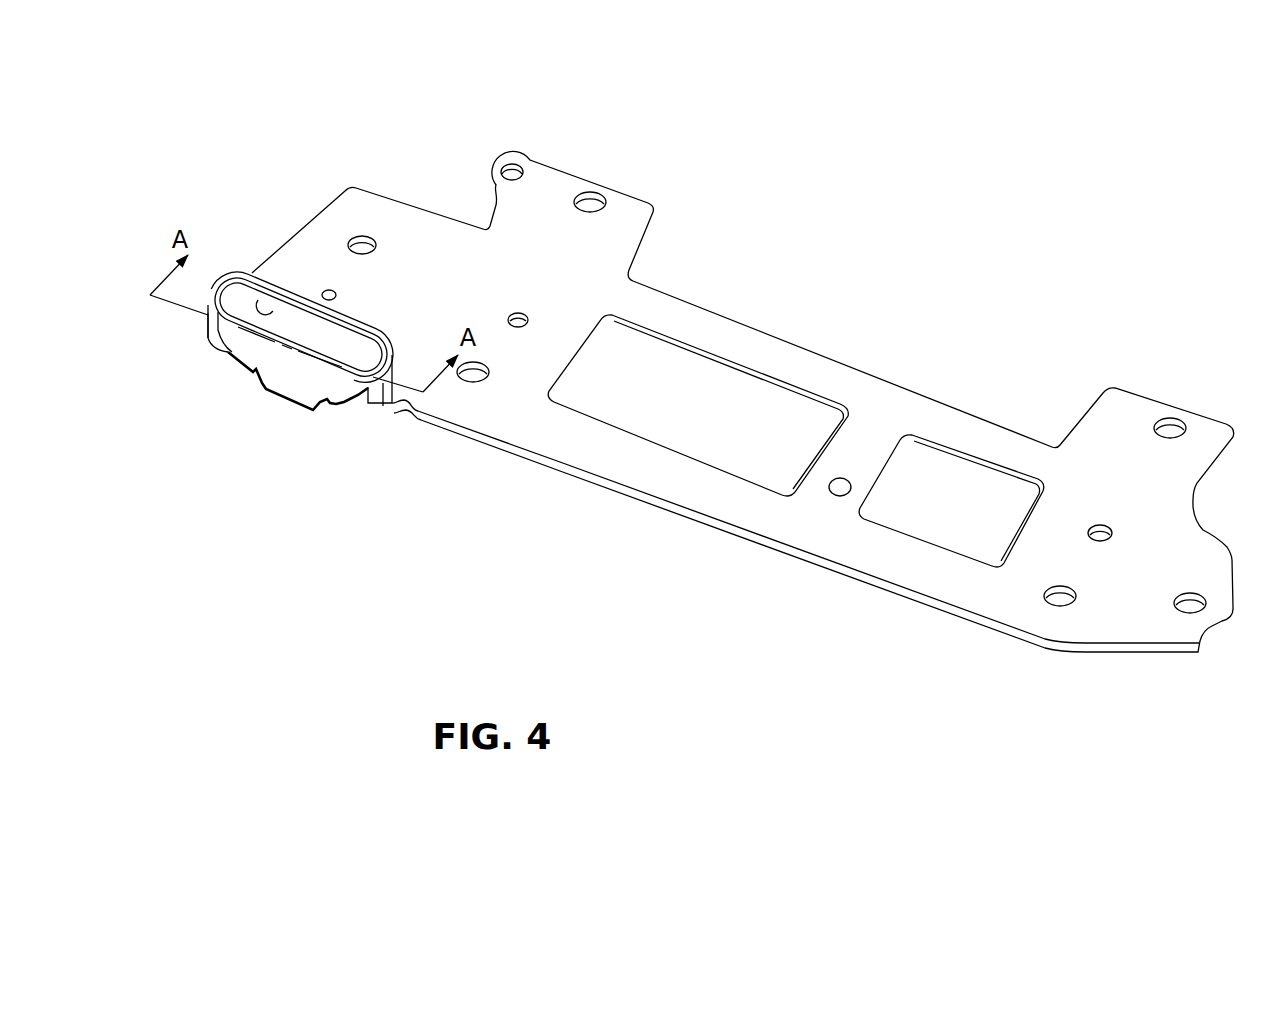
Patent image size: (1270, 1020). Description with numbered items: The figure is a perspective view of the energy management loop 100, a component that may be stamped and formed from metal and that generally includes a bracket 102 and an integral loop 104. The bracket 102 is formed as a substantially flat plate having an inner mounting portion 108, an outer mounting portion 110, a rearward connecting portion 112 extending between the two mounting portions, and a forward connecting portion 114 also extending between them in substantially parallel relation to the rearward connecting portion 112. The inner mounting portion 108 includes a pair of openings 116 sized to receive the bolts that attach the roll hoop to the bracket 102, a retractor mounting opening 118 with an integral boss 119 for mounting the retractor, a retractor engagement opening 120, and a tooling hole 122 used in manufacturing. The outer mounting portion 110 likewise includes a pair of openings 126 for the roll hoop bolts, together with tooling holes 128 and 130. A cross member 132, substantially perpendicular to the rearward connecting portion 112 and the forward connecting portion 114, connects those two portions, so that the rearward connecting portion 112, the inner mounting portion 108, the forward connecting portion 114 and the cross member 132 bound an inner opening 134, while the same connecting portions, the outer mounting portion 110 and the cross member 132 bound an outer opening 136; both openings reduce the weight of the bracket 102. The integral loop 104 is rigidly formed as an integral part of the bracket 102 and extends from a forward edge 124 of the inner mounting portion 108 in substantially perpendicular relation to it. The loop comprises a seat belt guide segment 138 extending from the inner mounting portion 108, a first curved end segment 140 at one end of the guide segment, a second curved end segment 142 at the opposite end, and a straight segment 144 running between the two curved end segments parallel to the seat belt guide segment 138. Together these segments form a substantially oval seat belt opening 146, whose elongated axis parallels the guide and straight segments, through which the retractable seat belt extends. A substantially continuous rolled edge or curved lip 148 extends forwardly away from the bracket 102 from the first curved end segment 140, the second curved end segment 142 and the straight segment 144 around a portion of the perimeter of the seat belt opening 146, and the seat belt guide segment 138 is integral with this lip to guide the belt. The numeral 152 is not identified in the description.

The energy management loop 100 is at (772, 200).
The bracket 102 is at (866, 316).
The integral loop 104 is at (188, 328).
The inner mounting portion 108 is at (432, 228).
The outer mounting portion 110 is at (1197, 485).
The rearward connecting portion 112 is at (783, 357).
The forward connecting portion 114 is at (698, 490).
The openings 116 is at (587, 206).
The retractor mounting opening 118 is at (358, 240).
The integral boss 119 is at (362, 250).
The retractor engagement opening 120 is at (332, 290).
The tooling hole 122 is at (520, 316).
The forward edge 124 is at (488, 438).
The openings 126 is at (1170, 428).
The tooling hole 128 is at (1099, 522).
The tooling hole 130 is at (1187, 607).
The cross member 132 is at (898, 410).
The inner opening 134 is at (677, 426).
The outer opening 136 is at (937, 521).
The seat belt guide segment 138 is at (242, 353).
The first curved end segment 140 is at (207, 334).
The second curved end segment 142 is at (377, 387).
The straight segment 144 is at (360, 330).
The seat belt opening 146 is at (366, 360).
The curved lip 148 is at (260, 313).
The bottom edge 152 is at (287, 403).